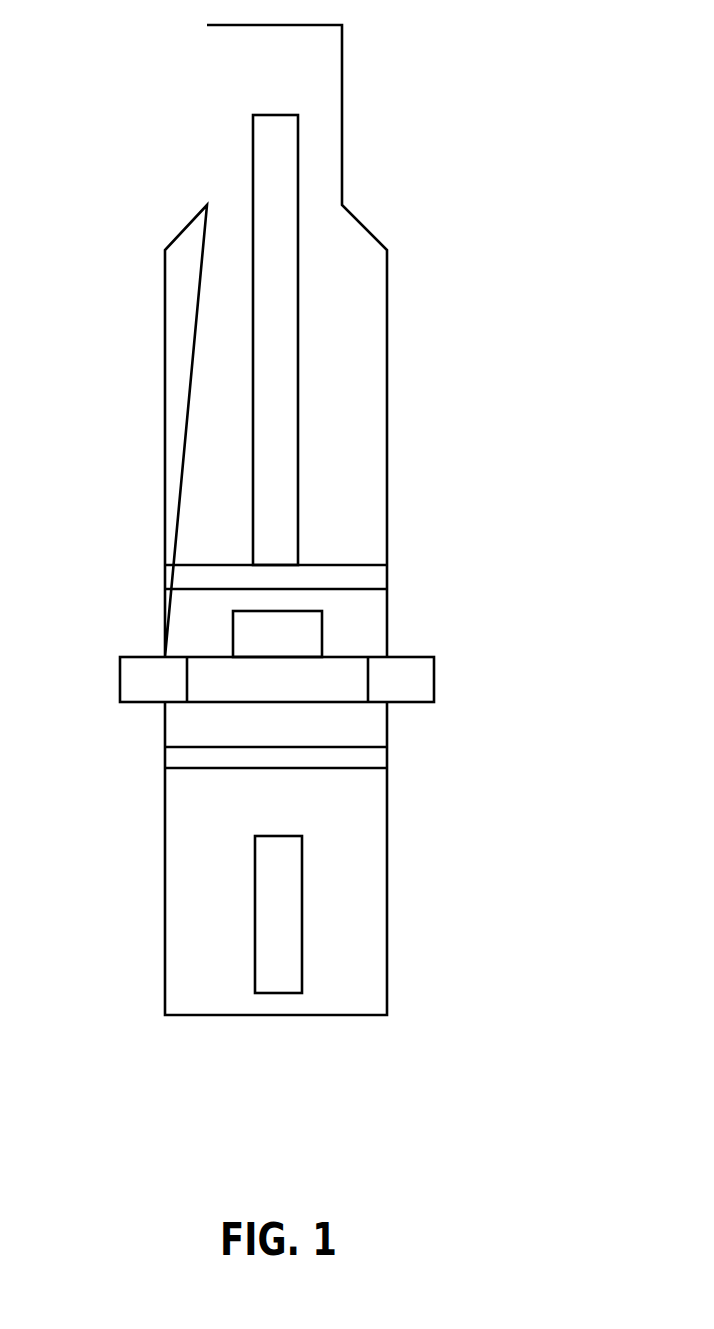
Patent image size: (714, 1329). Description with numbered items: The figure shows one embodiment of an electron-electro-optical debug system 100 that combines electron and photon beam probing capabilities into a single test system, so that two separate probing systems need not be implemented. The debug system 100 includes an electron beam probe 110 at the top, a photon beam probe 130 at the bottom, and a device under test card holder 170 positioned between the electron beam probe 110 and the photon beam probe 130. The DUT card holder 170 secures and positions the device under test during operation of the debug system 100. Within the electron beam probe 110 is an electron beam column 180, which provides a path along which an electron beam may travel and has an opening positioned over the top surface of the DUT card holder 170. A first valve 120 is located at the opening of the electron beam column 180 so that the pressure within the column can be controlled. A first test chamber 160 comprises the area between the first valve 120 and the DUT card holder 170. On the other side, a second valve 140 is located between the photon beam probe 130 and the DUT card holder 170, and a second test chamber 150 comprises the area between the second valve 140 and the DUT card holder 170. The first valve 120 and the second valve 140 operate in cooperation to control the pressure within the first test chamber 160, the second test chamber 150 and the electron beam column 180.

The electron-electro-optical debug system 100 is at (503, 533).
The electron beam probe 110 is at (388, 384).
The first valve 120 is at (178, 577).
The photon beam probe 130 is at (302, 972).
The second valve 140 is at (178, 757).
The second test chamber 150 is at (178, 723).
The first test chamber 160 is at (178, 621).
The device under test card holder 170 is at (435, 673).
The electron beam column 180 is at (298, 148).